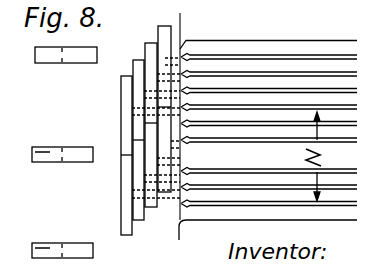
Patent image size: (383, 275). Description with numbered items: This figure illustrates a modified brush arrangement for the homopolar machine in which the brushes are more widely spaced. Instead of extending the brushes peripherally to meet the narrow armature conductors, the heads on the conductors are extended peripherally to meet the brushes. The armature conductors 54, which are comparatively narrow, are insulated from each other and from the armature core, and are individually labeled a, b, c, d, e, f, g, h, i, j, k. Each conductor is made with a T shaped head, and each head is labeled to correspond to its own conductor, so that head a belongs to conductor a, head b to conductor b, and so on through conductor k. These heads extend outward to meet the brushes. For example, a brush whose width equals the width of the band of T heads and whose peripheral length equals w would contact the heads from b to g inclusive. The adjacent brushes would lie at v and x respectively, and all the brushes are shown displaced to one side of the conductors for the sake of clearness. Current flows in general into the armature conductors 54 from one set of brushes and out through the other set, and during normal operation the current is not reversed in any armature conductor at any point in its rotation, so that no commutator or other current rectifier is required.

The armature conductor 54 is at (261, 72).
The armature conductor a is at (349, 225).
The armature conductor b is at (349, 211).
The armature conductor c is at (349, 196).
The armature conductor d is at (349, 180).
The armature conductor e is at (349, 149).
The armature conductor f is at (349, 133).
The armature conductor g is at (349, 116).
The armature conductor h is at (349, 100).
The armature conductor i is at (349, 83).
The armature conductor j is at (349, 66).
The armature conductor k is at (349, 50).
The adjacent brush position x is at (35, 54).
The brush peripheral length w is at (32, 153).
The adjacent brush position v is at (32, 249).